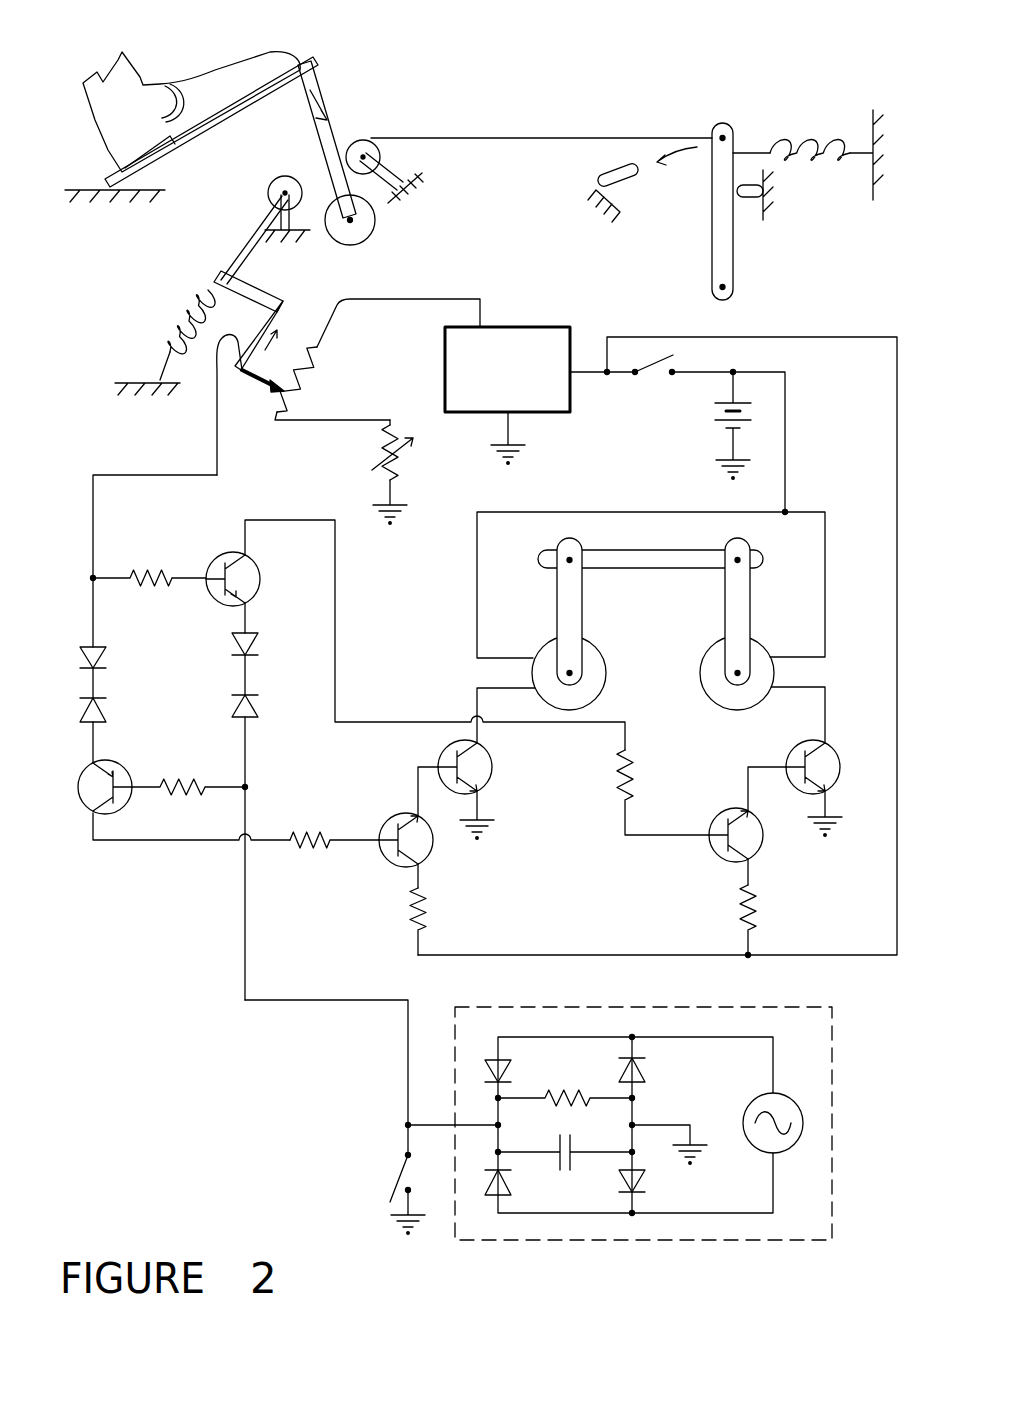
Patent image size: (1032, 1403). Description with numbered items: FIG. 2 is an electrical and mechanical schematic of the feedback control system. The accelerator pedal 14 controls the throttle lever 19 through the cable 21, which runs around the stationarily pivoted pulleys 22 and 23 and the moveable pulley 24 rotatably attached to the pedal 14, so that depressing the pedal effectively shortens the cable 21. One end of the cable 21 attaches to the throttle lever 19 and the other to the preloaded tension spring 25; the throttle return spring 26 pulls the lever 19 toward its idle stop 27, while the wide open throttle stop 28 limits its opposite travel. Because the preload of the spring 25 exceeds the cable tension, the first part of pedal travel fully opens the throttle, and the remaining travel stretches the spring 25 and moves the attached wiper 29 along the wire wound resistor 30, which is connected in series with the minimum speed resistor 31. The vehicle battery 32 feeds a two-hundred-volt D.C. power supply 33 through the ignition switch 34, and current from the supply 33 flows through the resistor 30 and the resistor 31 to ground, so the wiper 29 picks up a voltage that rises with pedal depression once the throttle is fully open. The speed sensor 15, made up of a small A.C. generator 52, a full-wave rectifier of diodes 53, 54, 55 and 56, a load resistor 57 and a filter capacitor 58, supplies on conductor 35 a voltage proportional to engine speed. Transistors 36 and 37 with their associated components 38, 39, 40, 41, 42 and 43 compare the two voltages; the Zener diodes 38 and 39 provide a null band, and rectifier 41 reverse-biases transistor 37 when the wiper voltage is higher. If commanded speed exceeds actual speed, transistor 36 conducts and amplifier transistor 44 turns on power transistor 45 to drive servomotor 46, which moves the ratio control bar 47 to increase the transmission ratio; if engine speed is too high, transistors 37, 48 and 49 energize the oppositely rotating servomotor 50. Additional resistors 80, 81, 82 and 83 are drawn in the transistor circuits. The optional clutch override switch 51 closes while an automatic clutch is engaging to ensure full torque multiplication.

The accelerator pedal 14 is at (306, 62).
The speed sensor 15 is at (648, 1123).
The throttle lever 19 is at (735, 135).
The cable 21 is at (525, 137).
The stationarily pivoted pulley 22 is at (361, 140).
The stationarily pivoted pulley 23 is at (285, 176).
The moveable pulley 24 is at (375, 235).
The preloaded tension spring 25 is at (165, 318).
The throttle return spring 26 is at (810, 152).
The idle stop 27 is at (747, 200).
The wide open throttle stop 28 is at (632, 182).
The wiper 29 is at (242, 372).
The wire wound resistor 30 is at (322, 378).
The minimum speed resistor 31 is at (398, 477).
The battery 32 is at (720, 420).
The power supply 33 is at (527, 327).
The ignition switch 34 is at (655, 365).
The conductor 35 is at (313, 1000).
The transistor 36 is at (130, 768).
The transistor 37 is at (260, 590).
The Zener diode 38 is at (110, 705).
The Zener diode 39 is at (260, 648).
The component 40 is at (108, 657).
The rectifier 41 is at (262, 710).
The component 42 is at (182, 775).
The component 43 is at (148, 566).
The amplifier transistor 44 is at (435, 855).
The power transistor 45 is at (494, 775).
The servomotor 46 is at (606, 660).
The ratio control bar 47 is at (630, 568).
The amplifier transistor 48 is at (715, 855).
The transistor 49 is at (840, 748).
The servomotor 50 is at (725, 705).
The clutch override switch 51 is at (400, 1178).
The A.C. generator 52 is at (746, 1105).
The diode 53 is at (645, 1075).
The diode 54 is at (512, 1072).
The diode 55 is at (510, 1177).
The diode 56 is at (645, 1180).
The load resistor 57 is at (565, 1102).
The filter capacitor 58 is at (578, 1142).
The resistor 80 is at (300, 850).
The resistor 81 is at (615, 795).
The resistor 82 is at (425, 912).
The resistor 83 is at (760, 910).